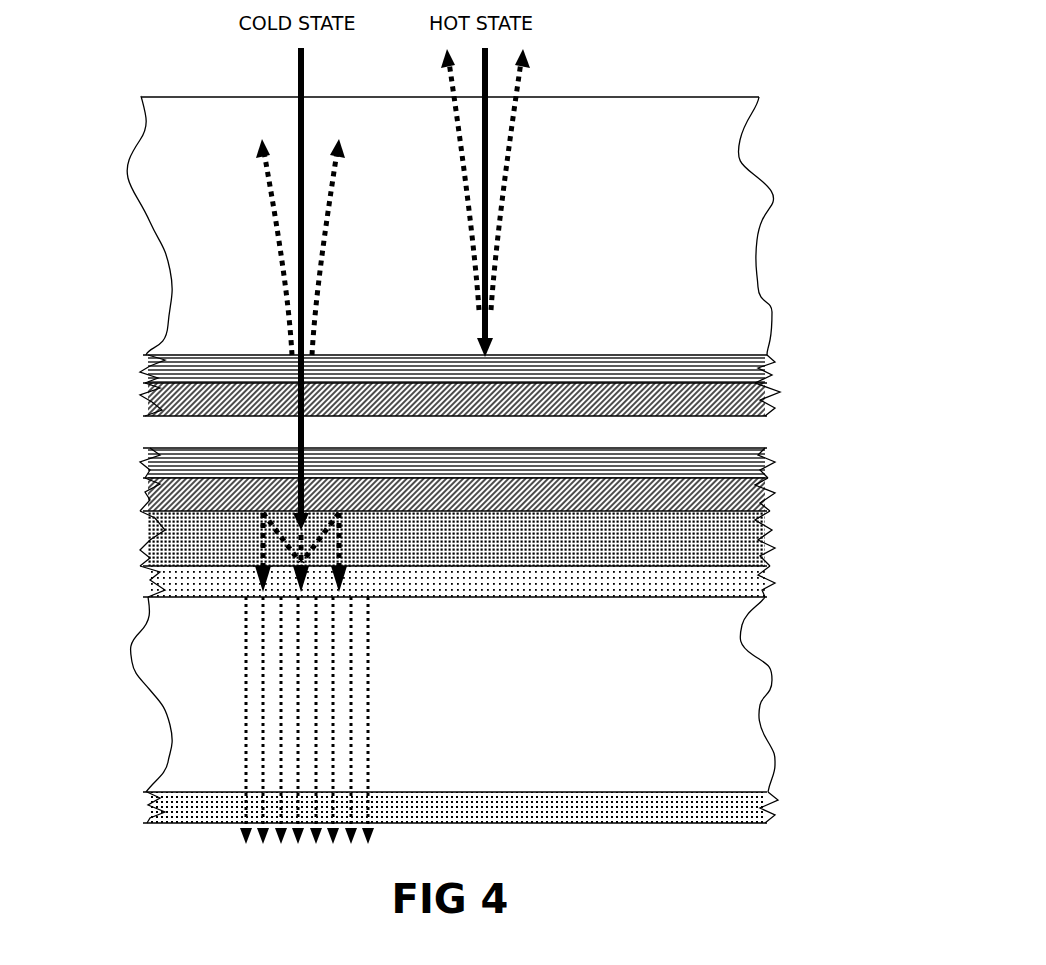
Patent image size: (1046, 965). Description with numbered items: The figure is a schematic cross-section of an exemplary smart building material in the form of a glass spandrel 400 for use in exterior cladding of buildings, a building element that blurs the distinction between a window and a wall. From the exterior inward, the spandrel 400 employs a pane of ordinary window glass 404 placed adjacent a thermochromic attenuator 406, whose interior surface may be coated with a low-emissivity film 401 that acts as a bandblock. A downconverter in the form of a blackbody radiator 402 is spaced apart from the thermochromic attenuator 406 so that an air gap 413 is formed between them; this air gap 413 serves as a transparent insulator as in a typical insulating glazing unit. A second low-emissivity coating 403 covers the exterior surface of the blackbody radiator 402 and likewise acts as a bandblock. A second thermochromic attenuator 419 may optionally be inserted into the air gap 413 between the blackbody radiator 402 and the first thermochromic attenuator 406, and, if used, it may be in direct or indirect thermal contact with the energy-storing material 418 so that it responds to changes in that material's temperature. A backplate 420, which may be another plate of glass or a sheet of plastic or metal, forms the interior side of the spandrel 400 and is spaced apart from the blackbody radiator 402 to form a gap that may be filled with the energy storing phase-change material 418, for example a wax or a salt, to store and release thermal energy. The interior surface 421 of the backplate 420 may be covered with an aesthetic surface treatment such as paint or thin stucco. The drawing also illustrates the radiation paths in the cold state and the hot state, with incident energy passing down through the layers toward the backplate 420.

The glass spandrel 400 is at (810, 110).
The pane of ordinary window glass 404 is at (774, 200).
The thermochromic attenuator 406 is at (152, 368).
The low-emissivity film 401 is at (401, 412).
The air gap 413 is at (770, 431).
The second thermochromic attenuator 419 is at (770, 467).
The second low-emissivity coating 403 is at (397, 493).
The blackbody radiator 402 is at (772, 541).
The energy storing phase-change material 418 is at (395, 592).
The backplate 420 is at (775, 672).
The interior surface 421 is at (775, 800).